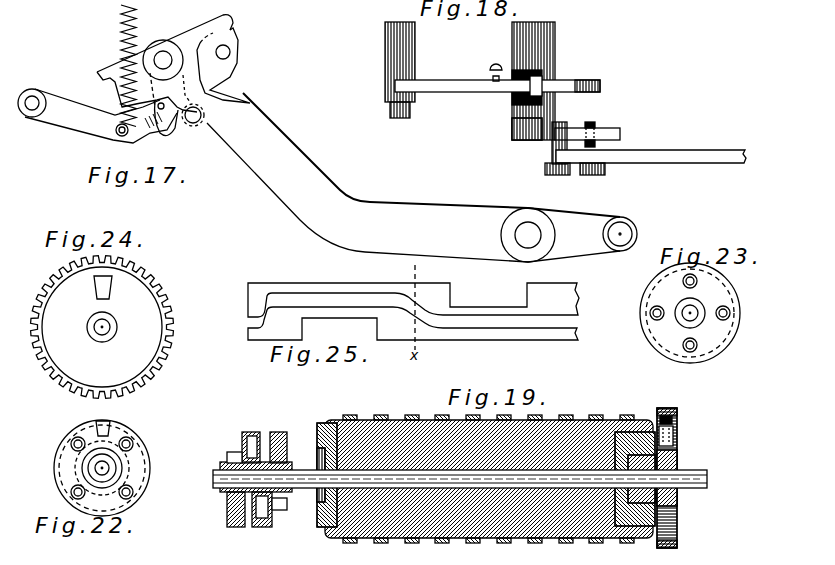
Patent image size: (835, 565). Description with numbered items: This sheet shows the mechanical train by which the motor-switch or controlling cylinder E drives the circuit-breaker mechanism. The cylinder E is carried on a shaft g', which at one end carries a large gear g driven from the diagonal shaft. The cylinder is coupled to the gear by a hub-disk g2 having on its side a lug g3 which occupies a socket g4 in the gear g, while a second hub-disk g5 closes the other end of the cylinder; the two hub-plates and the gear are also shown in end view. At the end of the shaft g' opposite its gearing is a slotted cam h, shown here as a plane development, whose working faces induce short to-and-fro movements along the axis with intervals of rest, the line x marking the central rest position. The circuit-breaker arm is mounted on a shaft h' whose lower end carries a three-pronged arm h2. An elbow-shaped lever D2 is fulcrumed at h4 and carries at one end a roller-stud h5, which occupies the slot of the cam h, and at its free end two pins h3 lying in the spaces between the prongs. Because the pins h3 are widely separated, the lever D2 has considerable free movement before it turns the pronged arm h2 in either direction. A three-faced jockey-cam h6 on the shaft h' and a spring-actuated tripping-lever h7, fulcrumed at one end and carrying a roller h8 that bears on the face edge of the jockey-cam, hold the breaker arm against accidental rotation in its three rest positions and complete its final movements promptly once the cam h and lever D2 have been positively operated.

In FIG. 17, the shaft h' is at (165, 63).
In FIG. 18, the shaft h' is at (470, 81).
In FIG. 17, the three-pronged arm h2 is at (236, 94).
In FIG. 18, the three-pronged arm h2 is at (599, 136).
In FIG. 17, the pins h3 is at (231, 50).
In FIG. 18, the pins h3 is at (592, 124).
In FIG. 17, the fulcrum h4 is at (528, 235).
In FIG. 17, the roller-stud h5 is at (633, 232).
In FIG. 17, the three-faced jockey-cam h6 is at (192, 84).
In FIG. 18, the three-faced jockey-cam h6 is at (497, 74).
In FIG. 17, the spring-actuated tripping-lever h7 is at (97, 116).
In FIG. 17, the roller h8 is at (161, 110).
In FIG. 18, the roller h8 is at (548, 72).
In FIG. 17, the elbow-shaped lever D2 is at (413, 177).
In FIG. 18, the elbow-shaped lever D2 is at (645, 150).
In FIG. 25, the slotted cam h is at (413, 311).
In FIG. 19, the slotted cam h is at (256, 469).
In FIG. 24, the gear g is at (102, 327).
In FIG. 19, the gear g is at (668, 466).
In FIG. 19, the shaft g' is at (470, 480).
In FIG. 22, the hub-disk g2 is at (140, 463).
In FIG. 19, the hub-disk g2 is at (633, 478).
In FIG. 22, the lug g3 is at (110, 425).
In FIG. 19, the lug g3 is at (674, 437).
In FIG. 24, the socket g4 is at (103, 287).
In FIG. 19, the socket g4 is at (674, 420).
In FIG. 23, the hub-disk g5 is at (690, 313).
In FIG. 19, the hub-disk g5 is at (318, 436).
In FIG. 19, the motor-switch cylinder E is at (489, 479).